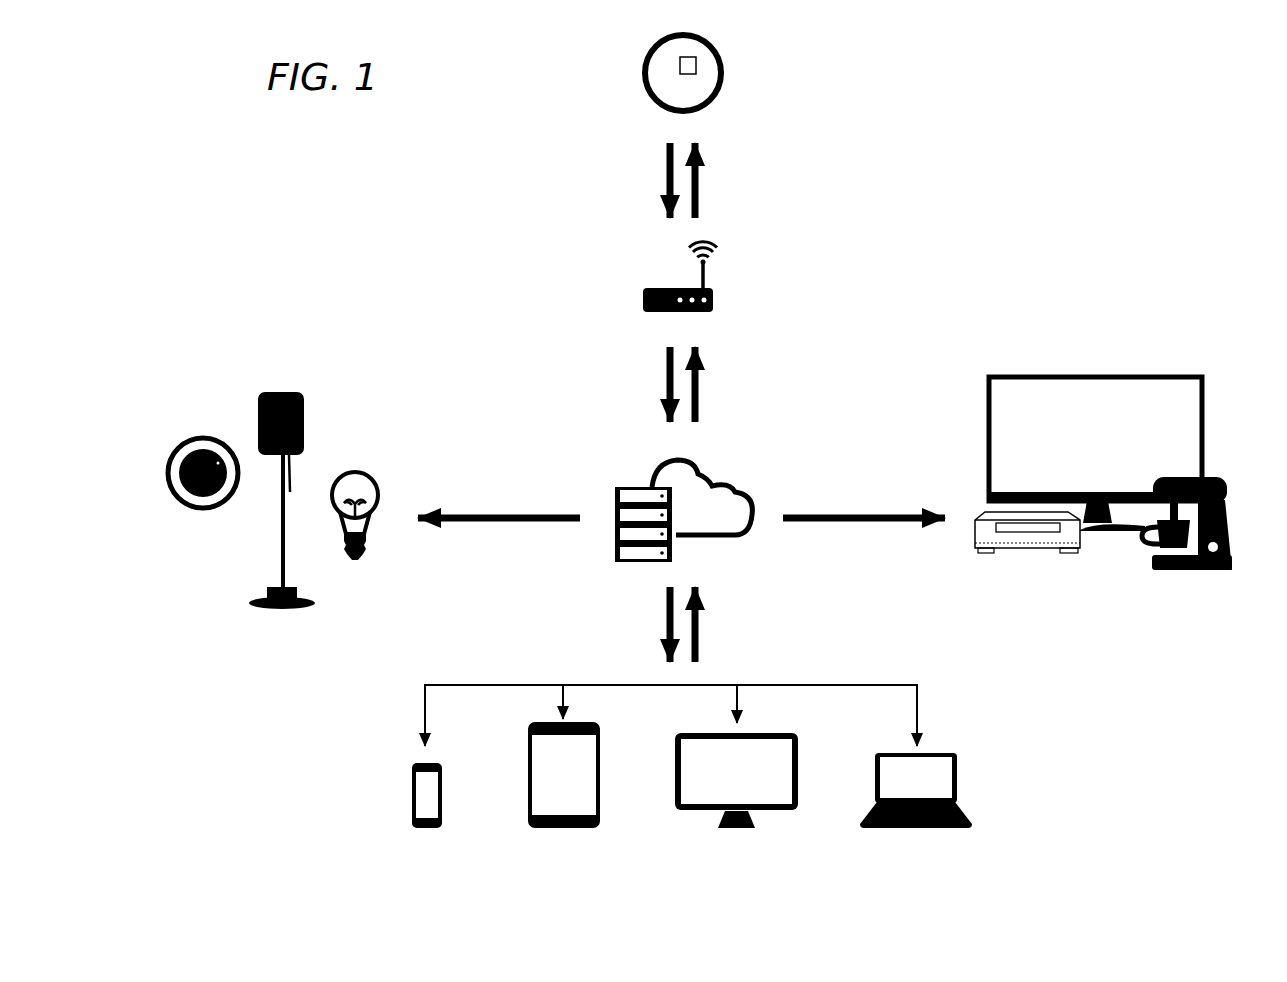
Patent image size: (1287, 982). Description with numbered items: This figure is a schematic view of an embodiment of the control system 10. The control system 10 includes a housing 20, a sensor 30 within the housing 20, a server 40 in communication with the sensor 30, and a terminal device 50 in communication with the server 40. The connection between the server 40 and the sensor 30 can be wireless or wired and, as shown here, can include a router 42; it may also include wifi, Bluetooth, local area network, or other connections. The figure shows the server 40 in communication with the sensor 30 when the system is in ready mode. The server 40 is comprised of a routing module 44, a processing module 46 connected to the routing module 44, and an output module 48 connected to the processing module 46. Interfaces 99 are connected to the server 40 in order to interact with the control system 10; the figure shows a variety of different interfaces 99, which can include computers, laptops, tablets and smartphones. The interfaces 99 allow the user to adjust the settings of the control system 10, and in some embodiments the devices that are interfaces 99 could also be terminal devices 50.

The control system 10 is at (447, 216).
The housing 20 is at (675, 67).
The sensor 30 is at (695, 68).
The server 40 is at (641, 491).
The router 42 is at (738, 283).
The routing module 44 is at (625, 497).
The processing module 46 is at (627, 517).
The output module 48 is at (625, 532).
The terminal device 50 is at (282, 370).
The interfaces 99 is at (918, 677).